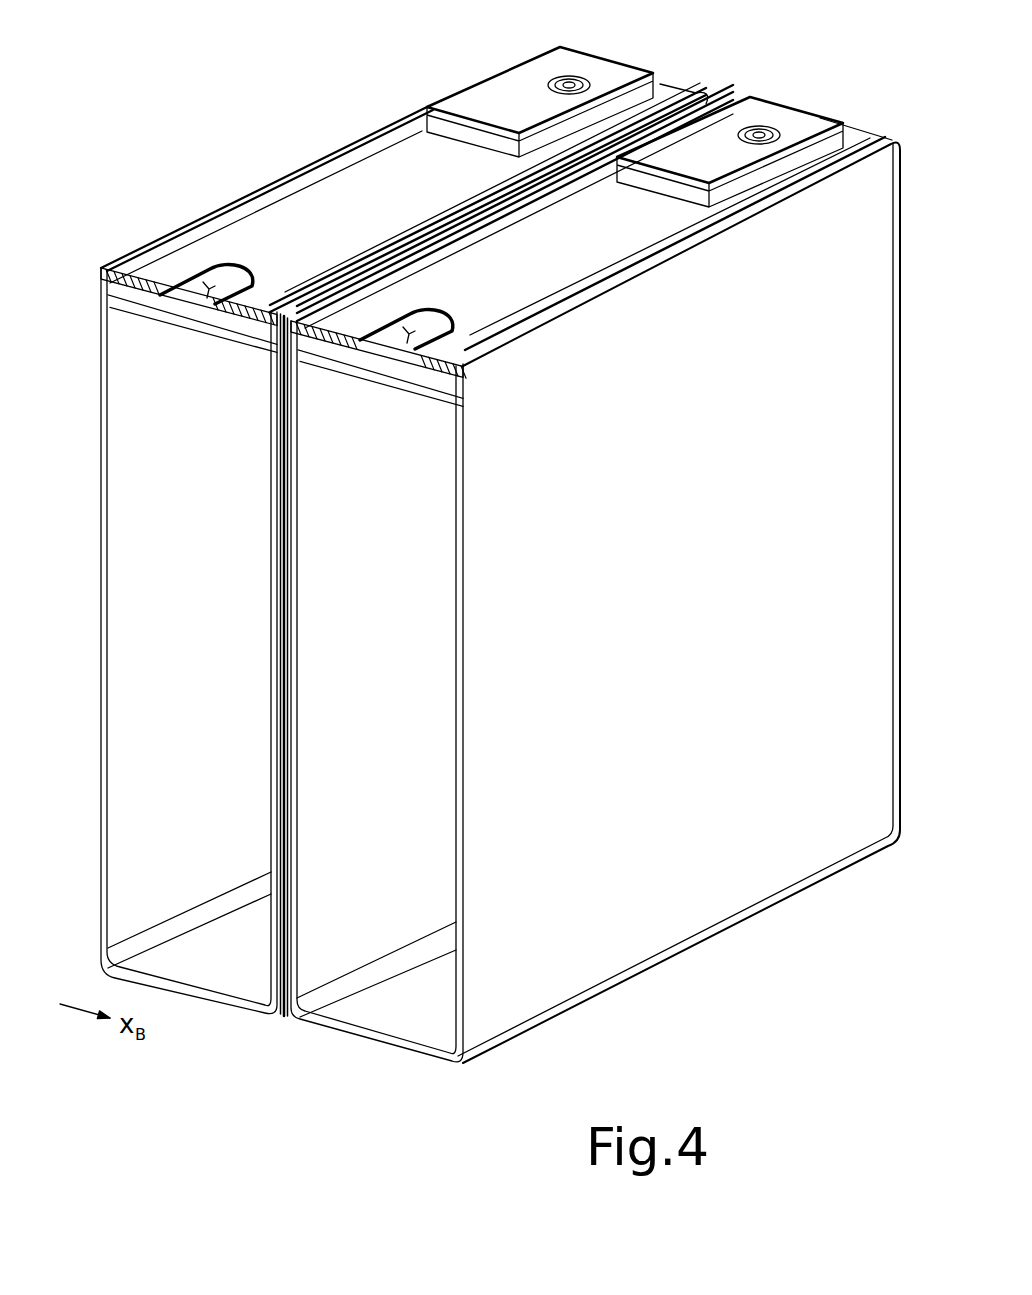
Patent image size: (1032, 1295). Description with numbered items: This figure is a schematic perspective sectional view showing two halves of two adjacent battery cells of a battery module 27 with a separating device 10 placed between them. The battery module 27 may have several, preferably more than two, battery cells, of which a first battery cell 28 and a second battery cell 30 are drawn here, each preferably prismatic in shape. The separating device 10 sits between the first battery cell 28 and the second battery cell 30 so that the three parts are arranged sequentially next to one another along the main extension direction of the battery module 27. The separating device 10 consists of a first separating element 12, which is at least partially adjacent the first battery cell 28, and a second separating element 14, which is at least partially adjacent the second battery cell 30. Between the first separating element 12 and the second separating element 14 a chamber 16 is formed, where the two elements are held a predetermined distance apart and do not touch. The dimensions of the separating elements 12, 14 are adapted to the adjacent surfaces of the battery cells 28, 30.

The separating device 10 is at (297, 298).
The first separating element 12 is at (272, 588).
The second separating element 14 is at (297, 916).
The chamber 16 is at (271, 643).
The battery module 27 is at (363, 110).
The first battery cell 28 is at (277, 147).
The second battery cell 30 is at (700, 887).